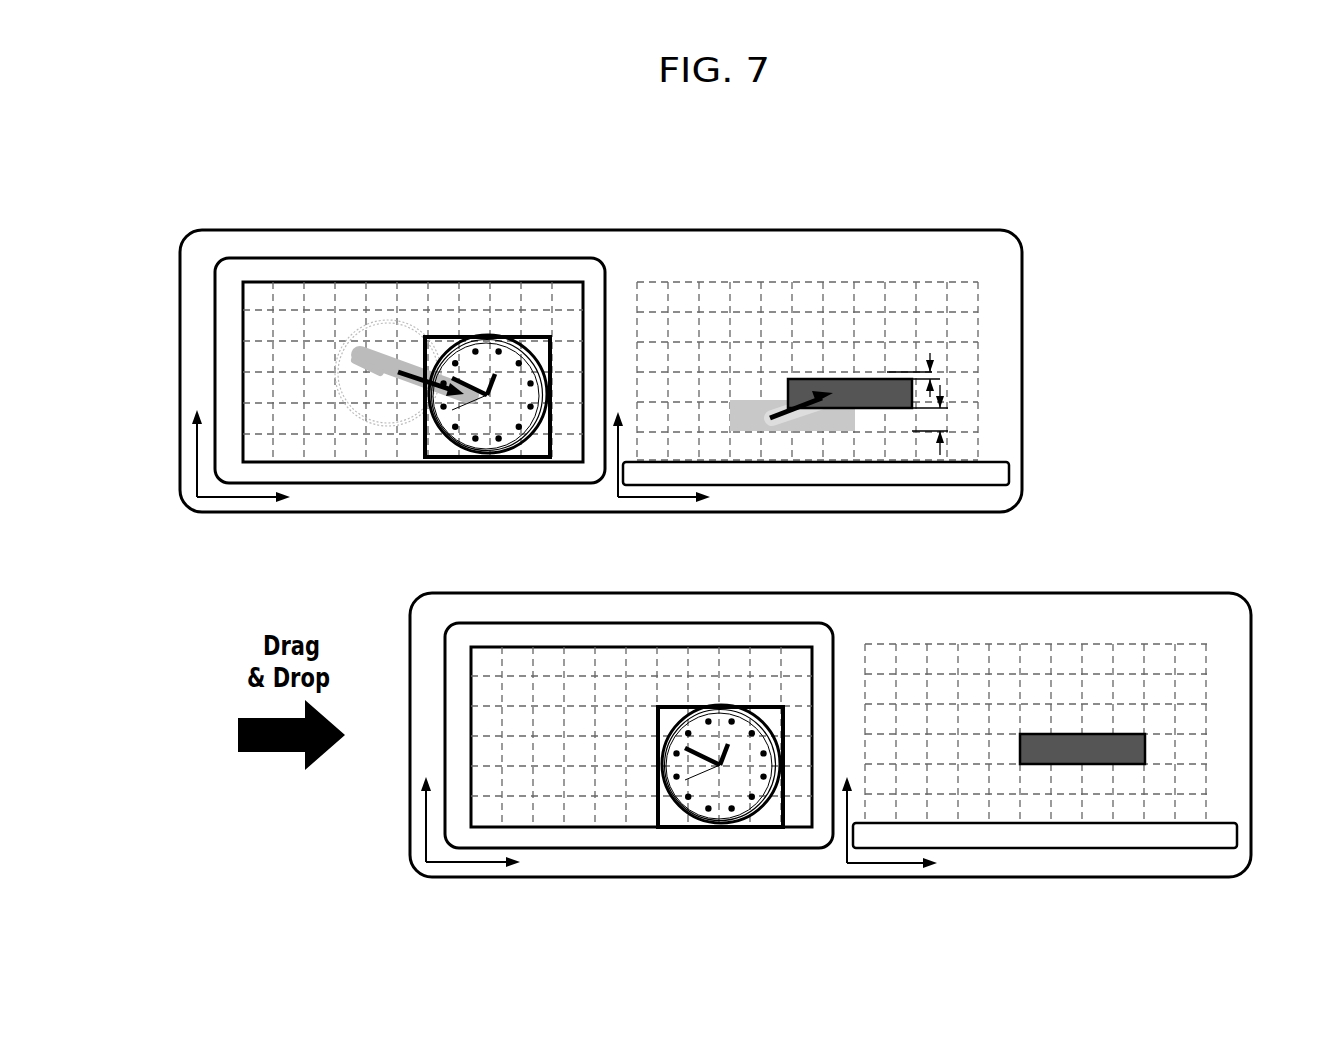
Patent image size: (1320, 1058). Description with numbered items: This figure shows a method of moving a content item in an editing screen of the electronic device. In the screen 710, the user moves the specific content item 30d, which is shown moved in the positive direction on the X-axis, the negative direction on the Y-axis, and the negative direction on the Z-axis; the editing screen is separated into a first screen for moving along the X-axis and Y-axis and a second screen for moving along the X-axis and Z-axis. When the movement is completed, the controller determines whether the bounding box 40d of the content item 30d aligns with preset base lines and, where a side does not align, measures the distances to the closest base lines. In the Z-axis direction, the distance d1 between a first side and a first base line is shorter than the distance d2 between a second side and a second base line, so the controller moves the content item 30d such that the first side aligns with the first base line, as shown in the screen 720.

The screen 710 is at (742, 221).
The screen 720 is at (895, 586).
The specific content item 30d is at (485, 458).
The bounding box 40d is at (484, 337).
The distance d1 is at (925, 375).
The distance d2 is at (943, 420).